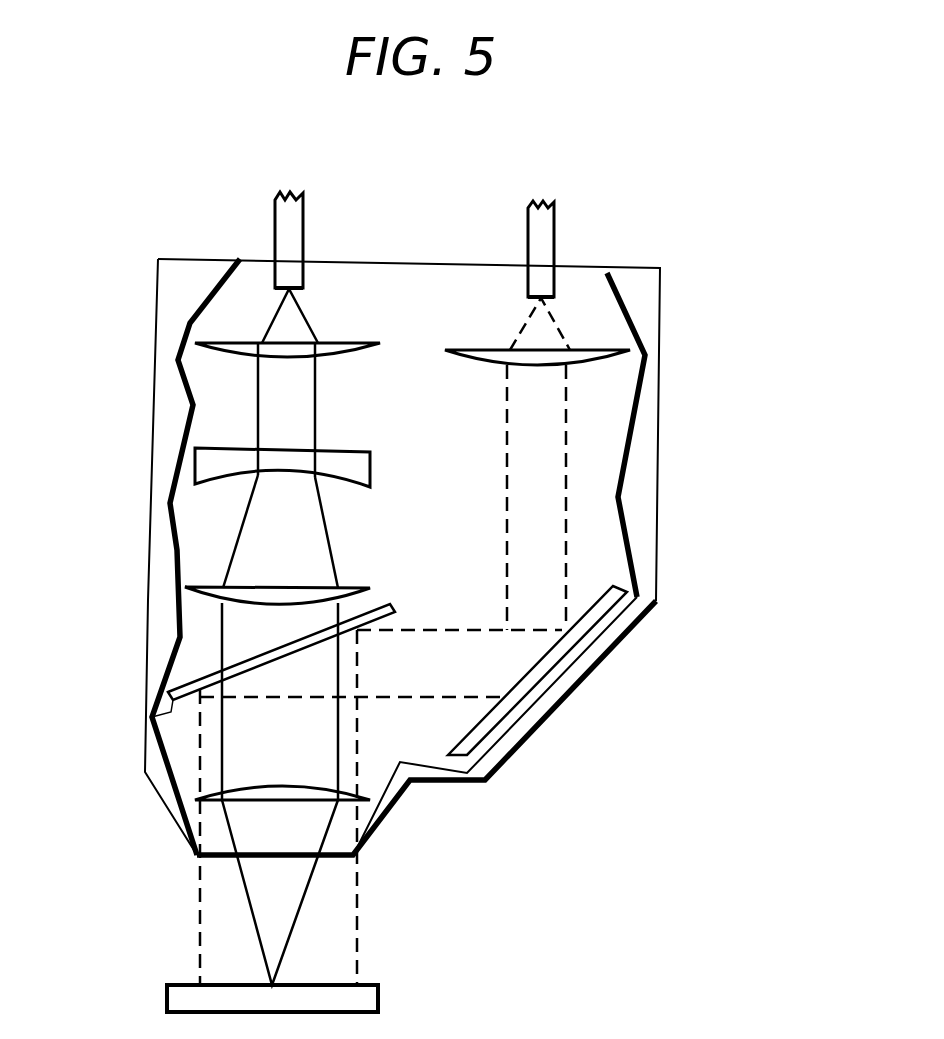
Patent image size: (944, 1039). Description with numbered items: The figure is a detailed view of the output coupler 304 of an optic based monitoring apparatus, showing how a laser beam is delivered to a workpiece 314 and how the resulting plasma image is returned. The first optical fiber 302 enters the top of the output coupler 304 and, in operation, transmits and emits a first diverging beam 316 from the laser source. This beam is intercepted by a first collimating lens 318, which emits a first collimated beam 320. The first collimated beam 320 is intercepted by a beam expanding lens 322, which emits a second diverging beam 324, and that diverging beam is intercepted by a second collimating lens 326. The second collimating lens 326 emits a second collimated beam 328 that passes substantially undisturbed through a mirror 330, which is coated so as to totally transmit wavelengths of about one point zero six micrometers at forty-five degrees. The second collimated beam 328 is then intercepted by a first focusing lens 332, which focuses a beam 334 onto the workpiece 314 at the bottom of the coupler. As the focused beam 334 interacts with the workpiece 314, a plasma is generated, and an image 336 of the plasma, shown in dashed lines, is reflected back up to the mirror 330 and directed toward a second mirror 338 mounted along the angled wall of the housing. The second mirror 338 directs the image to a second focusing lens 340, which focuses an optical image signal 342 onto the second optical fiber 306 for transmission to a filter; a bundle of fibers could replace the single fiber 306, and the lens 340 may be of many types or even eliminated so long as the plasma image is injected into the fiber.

The first optical fiber 302 is at (277, 223).
The output coupler 304 is at (660, 443).
The second optical fiber 306 is at (556, 222).
The workpiece 314 is at (378, 1003).
The first diverging beam 316 is at (305, 315).
The first collimating lens 318 is at (325, 357).
The first collimated beam 320 is at (257, 403).
The beam expanding lens 322 is at (372, 467).
The second diverging beam 324 is at (238, 533).
The second collimating lens 326 is at (185, 587).
The second collimated beam 328 is at (220, 632).
The mirror 330 is at (152, 717).
The first focusing lens 332 is at (197, 798).
The focused beam 334 is at (240, 885).
The image of the generated plasma 336 is at (353, 943).
The second mirror 338 is at (478, 745).
The second focusing lens 340 is at (602, 362).
The optical image signal 342 is at (552, 323).